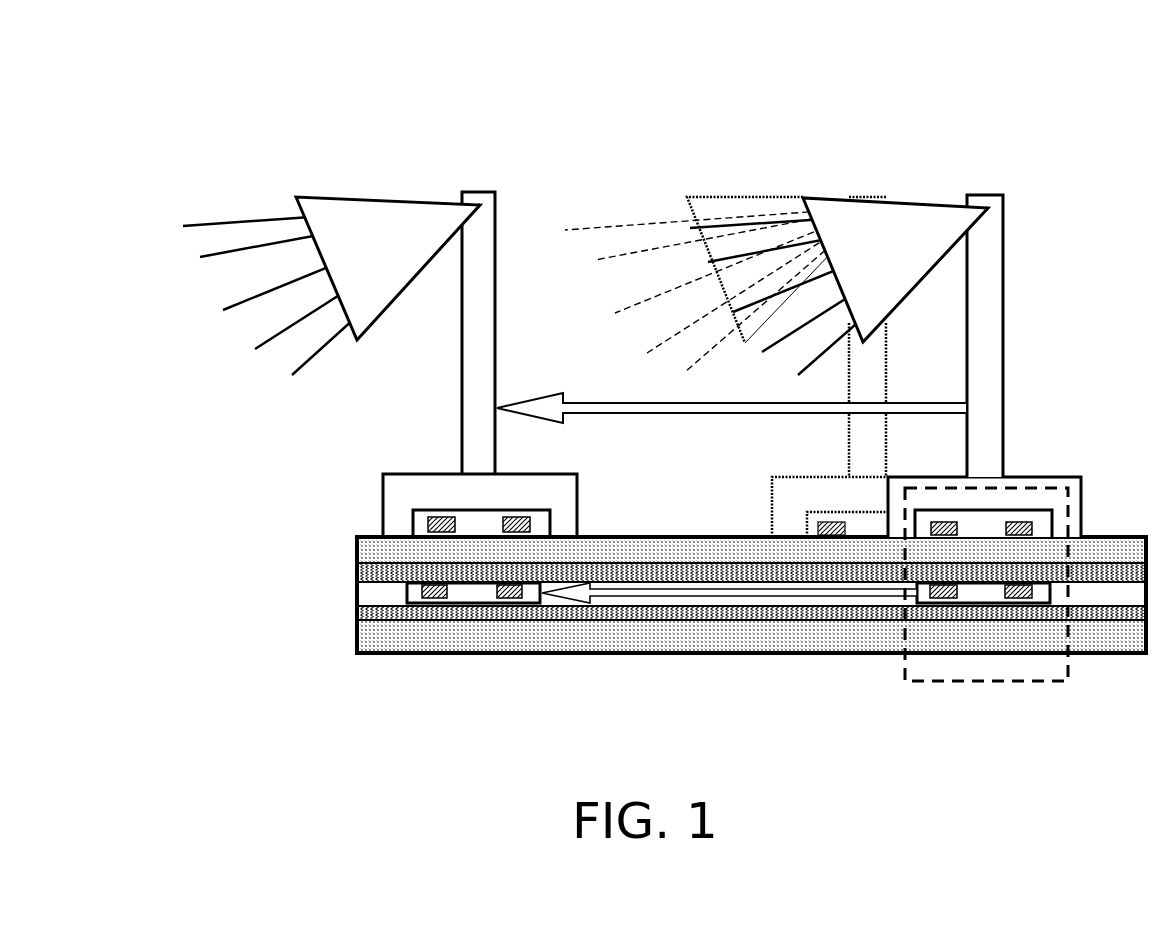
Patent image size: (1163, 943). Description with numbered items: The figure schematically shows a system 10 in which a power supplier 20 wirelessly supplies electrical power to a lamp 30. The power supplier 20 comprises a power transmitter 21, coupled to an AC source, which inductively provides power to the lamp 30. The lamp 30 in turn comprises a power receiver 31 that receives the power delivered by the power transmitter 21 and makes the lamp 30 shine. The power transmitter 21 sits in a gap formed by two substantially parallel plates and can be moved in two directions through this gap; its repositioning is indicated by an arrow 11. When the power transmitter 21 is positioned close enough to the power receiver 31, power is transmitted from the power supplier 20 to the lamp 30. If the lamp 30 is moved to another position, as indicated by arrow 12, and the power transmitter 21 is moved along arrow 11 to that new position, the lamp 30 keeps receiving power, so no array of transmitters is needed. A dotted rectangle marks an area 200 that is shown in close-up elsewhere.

The system 10 is at (587, 138).
The arrow 11 is at (643, 600).
The arrow 12 is at (590, 400).
The power supplier 20 is at (336, 533).
The power transmitter 21 is at (453, 605).
The lamp 30 is at (370, 197).
The power receiver 31 is at (425, 510).
The area 200 is at (1038, 682).